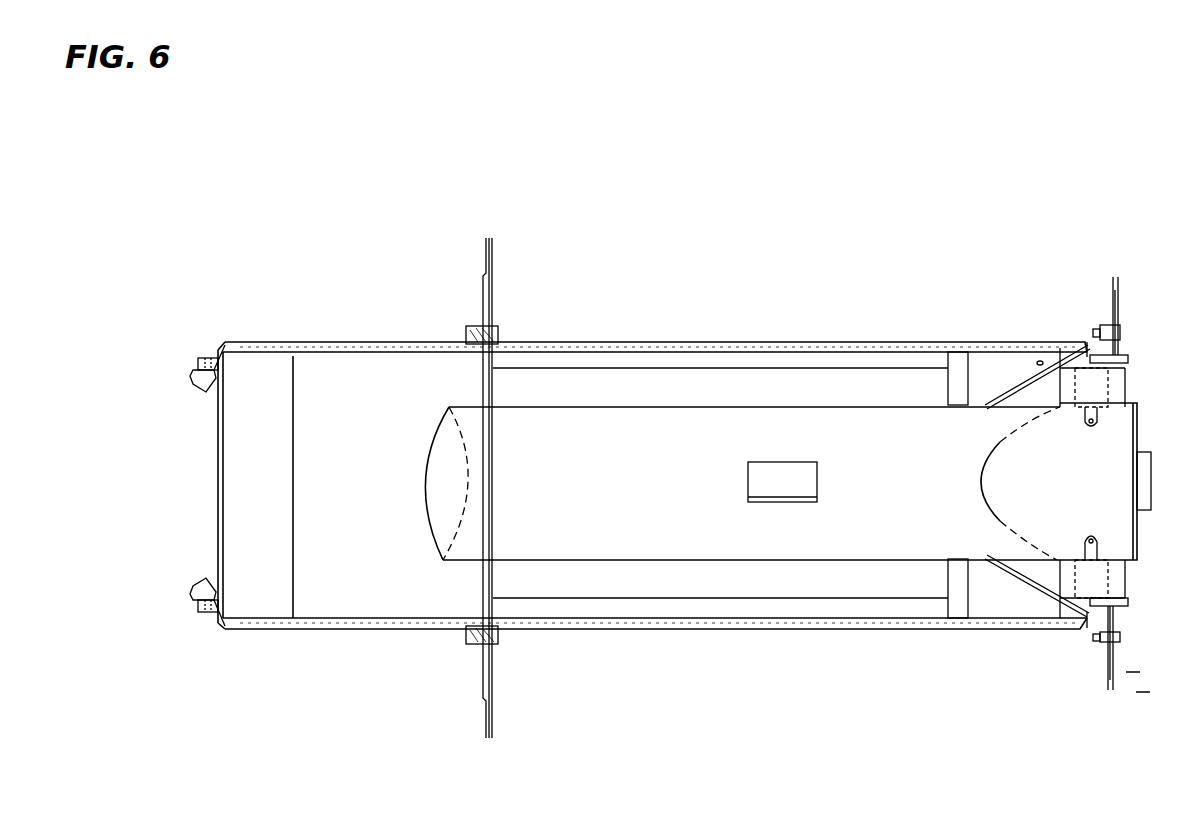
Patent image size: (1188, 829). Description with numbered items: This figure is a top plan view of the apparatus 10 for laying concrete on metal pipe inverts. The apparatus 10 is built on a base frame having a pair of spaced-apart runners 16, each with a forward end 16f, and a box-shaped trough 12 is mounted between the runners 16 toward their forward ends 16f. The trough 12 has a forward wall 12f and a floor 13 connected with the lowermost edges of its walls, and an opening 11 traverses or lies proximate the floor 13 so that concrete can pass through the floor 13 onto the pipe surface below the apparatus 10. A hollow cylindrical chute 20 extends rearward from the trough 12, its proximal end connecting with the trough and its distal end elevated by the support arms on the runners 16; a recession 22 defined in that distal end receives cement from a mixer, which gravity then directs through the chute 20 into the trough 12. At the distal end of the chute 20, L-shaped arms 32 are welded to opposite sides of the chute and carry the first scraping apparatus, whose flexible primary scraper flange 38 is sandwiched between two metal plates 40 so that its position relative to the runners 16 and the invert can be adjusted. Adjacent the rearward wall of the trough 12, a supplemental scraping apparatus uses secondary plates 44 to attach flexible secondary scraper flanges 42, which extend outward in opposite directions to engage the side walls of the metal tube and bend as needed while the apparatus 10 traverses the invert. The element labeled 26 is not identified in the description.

The apparatus 10 is at (943, 166).
The opening 11 is at (277, 580).
The trough 12 is at (294, 302).
The forward wall 12f is at (216, 490).
The floor 13 is at (340, 494).
The runner 16 is at (374, 344).
The forward end 16f is at (186, 374).
The chute 20 is at (661, 496).
The recession 22 is at (1000, 443).
The mounting block 26 is at (780, 478).
The L-shaped arm 32 is at (1066, 385).
The primary scraper flange 38 is at (1116, 280).
The metal plate 40 is at (1113, 648).
The secondary scraper flange 42 is at (486, 250).
The secondary plate 44 is at (494, 331).